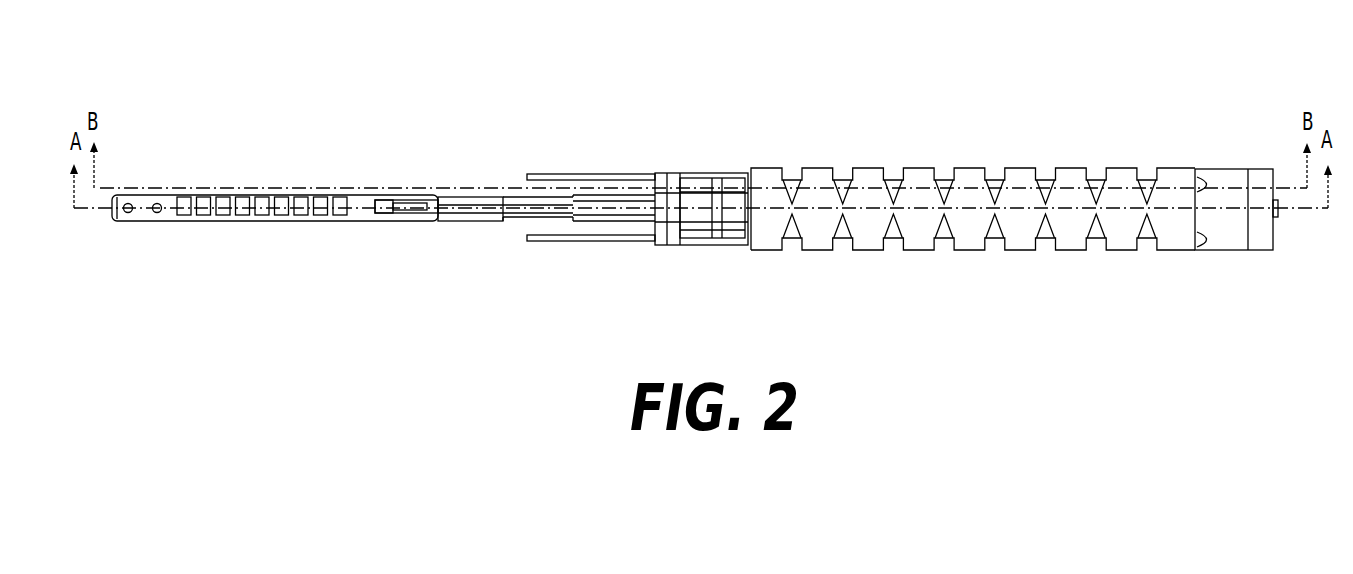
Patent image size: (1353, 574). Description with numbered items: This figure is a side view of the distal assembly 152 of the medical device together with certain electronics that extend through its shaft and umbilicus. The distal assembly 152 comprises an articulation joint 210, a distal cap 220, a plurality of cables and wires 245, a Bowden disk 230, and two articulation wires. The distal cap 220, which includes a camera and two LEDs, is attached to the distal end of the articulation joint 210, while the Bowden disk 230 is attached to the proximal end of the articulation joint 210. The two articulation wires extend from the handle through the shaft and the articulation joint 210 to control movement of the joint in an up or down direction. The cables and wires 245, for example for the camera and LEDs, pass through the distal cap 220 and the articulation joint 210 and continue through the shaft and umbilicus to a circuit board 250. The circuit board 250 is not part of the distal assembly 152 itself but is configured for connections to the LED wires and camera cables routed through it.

The distal assembly 152 is at (290, 83).
The articulation joint 210 is at (872, 168).
The distal cap 220 is at (1273, 238).
The Bowden disk 230 is at (673, 173).
The cables and wires 245 is at (587, 195).
The circuit board 250 is at (217, 222).